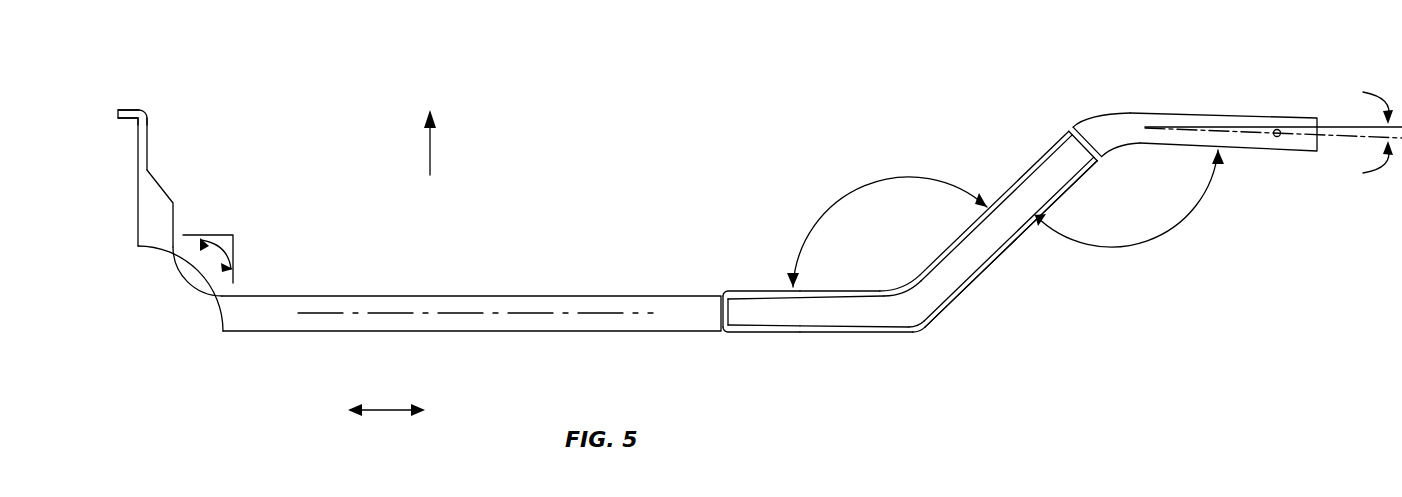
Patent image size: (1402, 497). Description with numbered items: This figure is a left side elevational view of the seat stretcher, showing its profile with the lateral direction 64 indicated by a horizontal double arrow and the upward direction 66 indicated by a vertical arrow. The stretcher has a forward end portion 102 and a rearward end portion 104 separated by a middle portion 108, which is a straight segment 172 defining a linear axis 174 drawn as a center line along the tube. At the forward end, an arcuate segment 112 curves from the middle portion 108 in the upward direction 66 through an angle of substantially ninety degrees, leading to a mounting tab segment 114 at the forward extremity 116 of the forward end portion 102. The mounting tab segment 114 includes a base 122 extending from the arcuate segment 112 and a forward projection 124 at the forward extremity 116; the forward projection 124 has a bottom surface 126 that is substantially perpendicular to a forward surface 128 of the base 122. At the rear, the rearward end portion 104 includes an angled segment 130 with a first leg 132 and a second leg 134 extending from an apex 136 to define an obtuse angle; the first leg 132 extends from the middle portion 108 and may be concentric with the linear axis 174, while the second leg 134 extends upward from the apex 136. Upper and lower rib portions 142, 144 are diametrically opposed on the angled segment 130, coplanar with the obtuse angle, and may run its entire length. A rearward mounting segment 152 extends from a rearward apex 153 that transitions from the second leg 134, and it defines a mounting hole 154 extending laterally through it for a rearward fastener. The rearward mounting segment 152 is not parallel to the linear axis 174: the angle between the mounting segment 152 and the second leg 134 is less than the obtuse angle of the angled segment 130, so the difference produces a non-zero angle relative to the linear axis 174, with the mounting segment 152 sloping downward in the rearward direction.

The lateral direction 64 is at (375, 413).
The upward direction 66 is at (433, 160).
The forward end portion 102 is at (384, 217).
The rearward end portion 104 is at (1036, 239).
The middle portion 108 is at (471, 310).
The arcuate segment 112 is at (192, 323).
The mounting tab segment 114 is at (148, 140).
The forward extremity 116 is at (120, 110).
The base 122 is at (175, 205).
The forward projection 124 is at (128, 110).
The bottom surface 126 is at (133, 122).
The forward surface 128 is at (137, 143).
The angled segment 130 is at (1029, 167).
The first leg 132 is at (815, 290).
The second leg 134 is at (988, 270).
The apex 136 is at (907, 333).
The upper rib portion 142 is at (753, 290).
The lower rib portion 144 is at (787, 333).
The rearward mounting segment 152 is at (1192, 112).
The rearward apex 153 is at (1110, 112).
The mounting hole 154 is at (1278, 137).
The straight segment 172 is at (490, 333).
The linear axis 174 is at (508, 312).